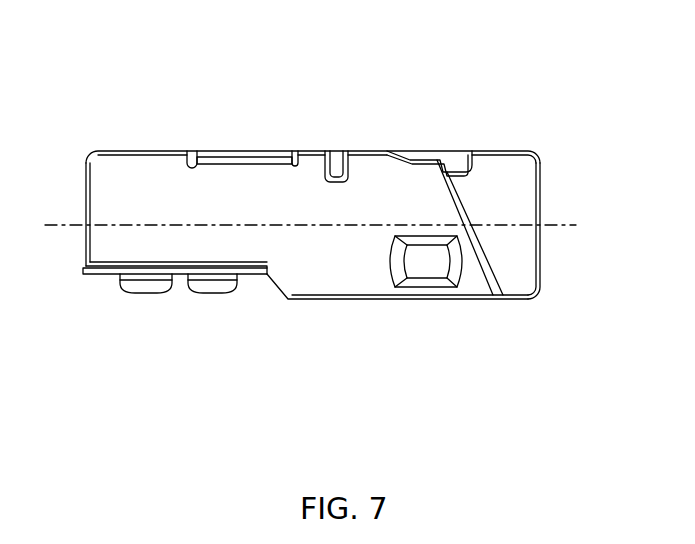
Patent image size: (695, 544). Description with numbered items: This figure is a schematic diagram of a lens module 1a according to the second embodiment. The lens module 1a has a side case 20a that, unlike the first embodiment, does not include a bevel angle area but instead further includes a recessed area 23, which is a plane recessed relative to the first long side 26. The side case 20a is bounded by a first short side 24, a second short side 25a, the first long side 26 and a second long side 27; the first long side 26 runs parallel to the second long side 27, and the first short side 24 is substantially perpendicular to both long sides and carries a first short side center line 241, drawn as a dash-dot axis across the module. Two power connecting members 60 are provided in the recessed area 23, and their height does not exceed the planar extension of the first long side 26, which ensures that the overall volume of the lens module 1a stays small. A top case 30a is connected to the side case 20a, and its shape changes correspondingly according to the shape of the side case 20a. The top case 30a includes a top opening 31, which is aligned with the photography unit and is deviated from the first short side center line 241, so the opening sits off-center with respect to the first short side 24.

The lens module 1a is at (70, 60).
The second short side 25a is at (86, 194).
The second long side 27 is at (164, 151).
The top case 30a is at (502, 173).
The first short side 24 is at (541, 263).
The first short side center line 241 is at (328, 226).
The side case 20a is at (333, 299).
The recessed area 23 is at (107, 275).
The power connecting members 60 is at (150, 293).
The top opening 31 is at (427, 287).
The first long side 26 is at (485, 299).